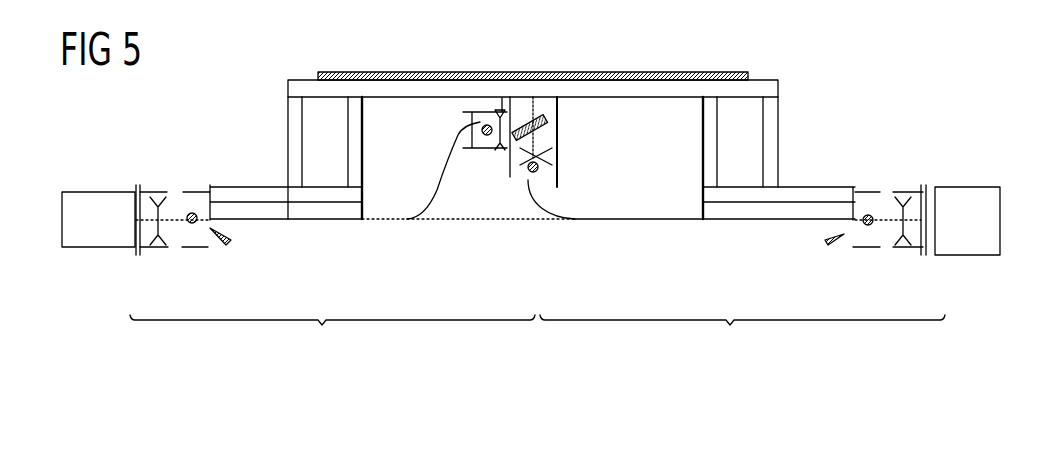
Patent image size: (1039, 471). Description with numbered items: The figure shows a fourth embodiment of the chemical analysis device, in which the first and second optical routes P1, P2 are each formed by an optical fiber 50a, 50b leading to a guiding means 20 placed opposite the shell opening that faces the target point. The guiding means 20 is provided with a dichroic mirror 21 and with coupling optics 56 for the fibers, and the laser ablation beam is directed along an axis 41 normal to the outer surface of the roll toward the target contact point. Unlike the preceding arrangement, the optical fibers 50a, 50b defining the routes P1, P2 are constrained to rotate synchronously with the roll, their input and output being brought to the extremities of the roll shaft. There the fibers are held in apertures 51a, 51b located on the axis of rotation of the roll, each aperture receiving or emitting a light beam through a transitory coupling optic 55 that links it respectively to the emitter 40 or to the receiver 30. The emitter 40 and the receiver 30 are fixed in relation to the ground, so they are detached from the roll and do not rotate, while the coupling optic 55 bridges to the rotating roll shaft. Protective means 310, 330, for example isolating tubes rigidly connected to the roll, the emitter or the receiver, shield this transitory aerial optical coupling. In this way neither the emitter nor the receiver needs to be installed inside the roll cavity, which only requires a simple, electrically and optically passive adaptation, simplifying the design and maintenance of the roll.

The guiding means 20 is at (560, 187).
The dichroic mirror 21 is at (551, 136).
The receiver 30 is at (958, 200).
The emitter 40 is at (101, 203).
The axis 41 is at (557, 108).
The optical fiber 50a is at (443, 143).
The optical fiber 50b is at (527, 188).
The aperture 51a is at (231, 241).
The aperture 51b is at (827, 242).
The transitory coupling optic 55 is at (166, 208).
The coupling optics 56 is at (488, 137).
The protective means 310 is at (157, 250).
The protective means 330 is at (186, 248).
The first optical route P1 is at (332, 338).
The second optical route P2 is at (742, 339).